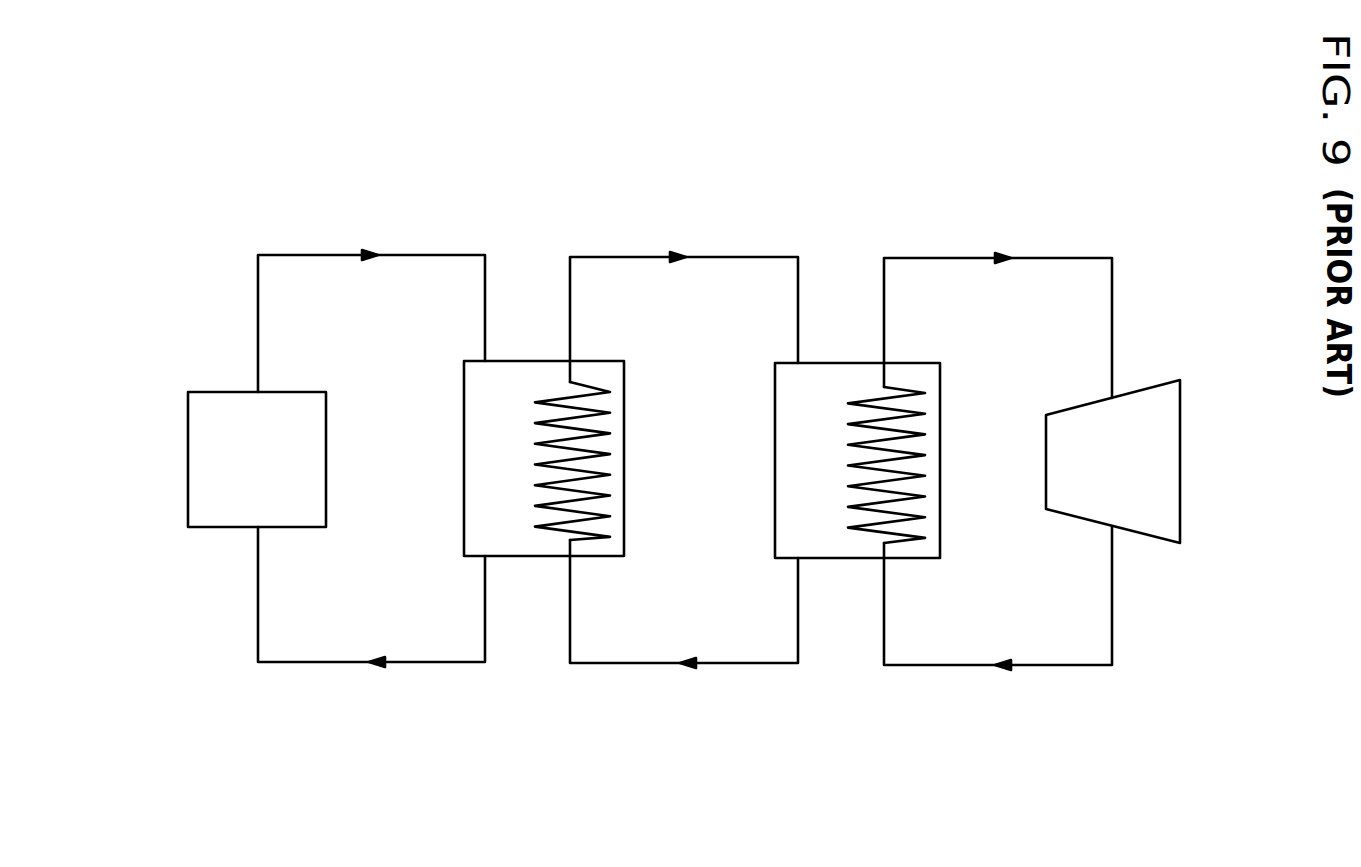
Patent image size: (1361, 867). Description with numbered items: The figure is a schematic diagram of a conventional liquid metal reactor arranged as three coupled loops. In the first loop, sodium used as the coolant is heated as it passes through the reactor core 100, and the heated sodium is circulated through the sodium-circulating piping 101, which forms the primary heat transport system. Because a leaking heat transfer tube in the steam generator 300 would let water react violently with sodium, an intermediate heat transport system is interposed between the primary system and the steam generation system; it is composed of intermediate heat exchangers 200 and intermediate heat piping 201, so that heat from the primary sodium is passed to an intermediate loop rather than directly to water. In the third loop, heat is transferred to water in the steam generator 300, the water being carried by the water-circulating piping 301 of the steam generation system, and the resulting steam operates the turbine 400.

The reactor core 100 is at (203, 512).
The sodium-circulating piping 101 is at (435, 662).
The intermediate heat exchanger 200 is at (535, 373).
The intermediate heat piping 201 is at (748, 663).
The steam generator 300 is at (843, 376).
The water-circulating piping 301 is at (1063, 665).
The turbine 400 is at (1173, 532).